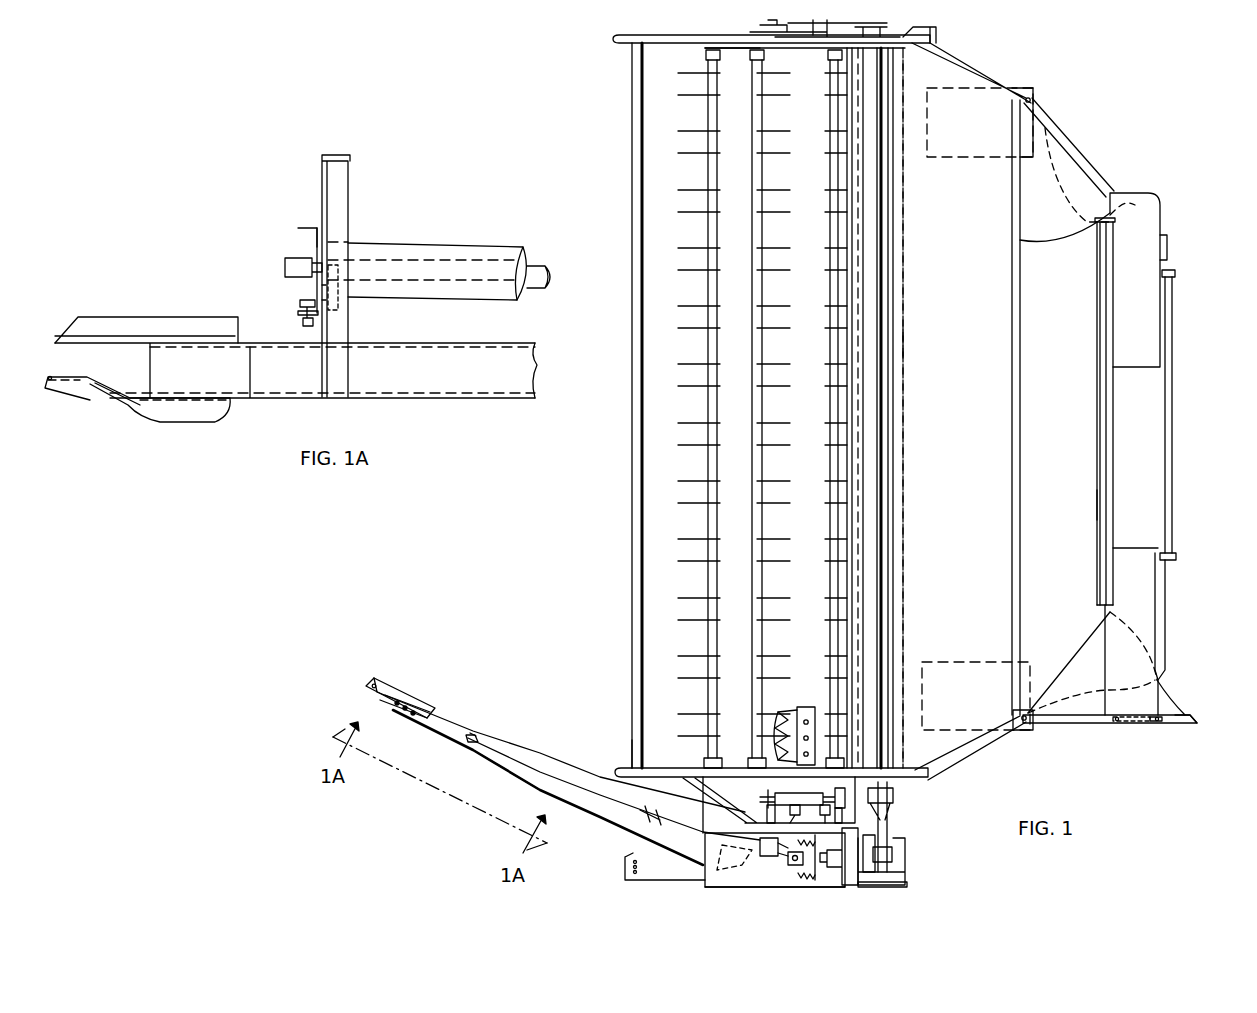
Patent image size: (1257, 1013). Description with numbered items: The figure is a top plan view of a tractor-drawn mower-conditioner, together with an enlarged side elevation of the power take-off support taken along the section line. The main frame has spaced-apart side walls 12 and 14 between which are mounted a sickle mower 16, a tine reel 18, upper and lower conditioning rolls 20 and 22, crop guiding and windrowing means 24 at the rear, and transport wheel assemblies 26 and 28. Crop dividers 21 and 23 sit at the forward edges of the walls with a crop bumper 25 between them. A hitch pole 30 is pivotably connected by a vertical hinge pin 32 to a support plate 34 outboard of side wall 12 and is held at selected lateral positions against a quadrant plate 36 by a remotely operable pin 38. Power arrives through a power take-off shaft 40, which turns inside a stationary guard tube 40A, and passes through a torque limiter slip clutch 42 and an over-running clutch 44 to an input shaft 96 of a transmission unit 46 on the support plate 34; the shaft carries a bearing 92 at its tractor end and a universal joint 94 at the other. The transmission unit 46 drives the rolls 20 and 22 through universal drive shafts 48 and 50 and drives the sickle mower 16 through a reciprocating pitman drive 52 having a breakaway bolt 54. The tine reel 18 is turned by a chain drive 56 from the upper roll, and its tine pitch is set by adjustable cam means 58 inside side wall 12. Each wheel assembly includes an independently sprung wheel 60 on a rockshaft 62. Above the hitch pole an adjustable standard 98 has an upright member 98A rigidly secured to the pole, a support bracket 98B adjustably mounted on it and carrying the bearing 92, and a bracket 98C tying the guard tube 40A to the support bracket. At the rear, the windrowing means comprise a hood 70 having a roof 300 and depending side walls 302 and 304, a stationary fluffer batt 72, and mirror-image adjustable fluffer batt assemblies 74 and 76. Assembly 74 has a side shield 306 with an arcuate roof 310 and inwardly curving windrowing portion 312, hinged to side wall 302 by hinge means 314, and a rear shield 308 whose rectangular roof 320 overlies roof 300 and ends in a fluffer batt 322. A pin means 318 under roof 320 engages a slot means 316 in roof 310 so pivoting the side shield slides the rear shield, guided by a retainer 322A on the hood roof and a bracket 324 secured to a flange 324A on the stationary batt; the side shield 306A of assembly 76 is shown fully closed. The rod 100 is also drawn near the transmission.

In FIG. 1, the side wall 12 is at (690, 766).
In FIG. 1, the side wall 14 is at (697, 43).
In FIG. 1, the sickle mower 16 is at (805, 705).
In FIG. 1, the tine reel 18 is at (748, 640).
In FIG. 1, the upper conditioning roll 20 is at (845, 462).
In FIG. 1, the crop divider 21 is at (620, 766).
In FIG. 1, the lower conditioning roll 22 is at (905, 543).
In FIG. 1, the crop divider 23 is at (630, 45).
In FIG. 1, the crop guiding and windrowing means 24 is at (973, 449).
In FIG. 1, the crop bumper 25 is at (632, 449).
In FIG. 1, the transport wheel assembly 26 is at (1025, 731).
In FIG. 1, the transport wheel assembly 28 is at (1034, 94).
In FIG. 1, the hitch pole 30 is at (520, 772).
In FIG. 1A, the hitch pole 30 is at (425, 398).
In FIG. 1, the hinge pin 32 is at (703, 865).
In FIG. 1, the support plate 34 is at (710, 883).
In FIG. 1, the quadrant plate 36 is at (626, 858).
In FIG. 1, the remotely operable pin 38 is at (652, 813).
In FIG. 1, the power take-off shaft 40 is at (468, 742).
In FIG. 1A, the power take-off shaft 40 is at (285, 265).
In FIG. 1, the guard tube 40A is at (530, 752).
In FIG. 1A, the guard tube 40A is at (452, 243).
In FIG. 1, the torque limiter slip clutch 42 is at (812, 872).
In FIG. 1, the over-running clutch 44 is at (848, 866).
In FIG. 1, the transmission unit 46 is at (890, 886).
In FIG. 1, the universal drive shaft 48 is at (905, 850).
In FIG. 1, the universal drive shaft 50 is at (890, 820).
In FIG. 1, the reciprocating pitman drive 52 is at (778, 798).
In FIG. 1, the breakaway bolt 54 is at (795, 815).
In FIG. 1, the chain drive 56 is at (748, 26).
In FIG. 1, the adjustable cam means 58 is at (745, 760).
In FIG. 1, the wheel 60 is at (954, 158).
In FIG. 1, the rockshaft 62 is at (912, 346).
In FIG. 1, the hood 70 is at (1102, 446).
In FIG. 1, the fluffer batt 72 is at (1172, 463).
In FIG. 1, the fluffer batt assembly 74 is at (1097, 735).
In FIG. 1, the fluffer batt assembly 76 is at (1095, 152).
In FIG. 1, the bearing 92 is at (473, 732).
In FIG. 1A, the bearing 92 is at (310, 283).
In FIG. 1, the universal joint 94 is at (787, 858).
In FIG. 1, the input shaft 96 is at (820, 855).
In FIG. 1A, the adjustable standard 98 is at (244, 243).
In FIG. 1A, the upright member 98A is at (350, 186).
In FIG. 1A, the support bracket 98B is at (317, 246).
In FIG. 1A, the bracket 98C is at (338, 305).
In FIG. 1, the rod 100 is at (866, 872).
In FIG. 1, the roof 300 is at (1082, 552).
In FIG. 1, the side wall 302 is at (955, 768).
In FIG. 1, the side wall 304 is at (975, 70).
In FIG. 1, the side shield 306 is at (1182, 725).
In FIG. 1, the side shield 306A is at (1072, 140).
In FIG. 1, the rear shield 308 is at (1165, 636).
In FIG. 1, the roof 310 is at (1080, 655).
In FIG. 1, the windrowing portion 312 is at (1180, 705).
In FIG. 1, the hinge means 314 is at (1032, 722).
In FIG. 1, the slot means 316 is at (1158, 725).
In FIG. 1, the pin means 318 is at (1120, 722).
In FIG. 1, the roof 320 is at (1150, 606).
In FIG. 1, the fluffer batt 322 is at (1160, 584).
In FIG. 1, the retainer 322A is at (1097, 497).
In FIG. 1, the bracket 324 is at (1176, 556).
In FIG. 1, the flange 324A is at (1172, 417).